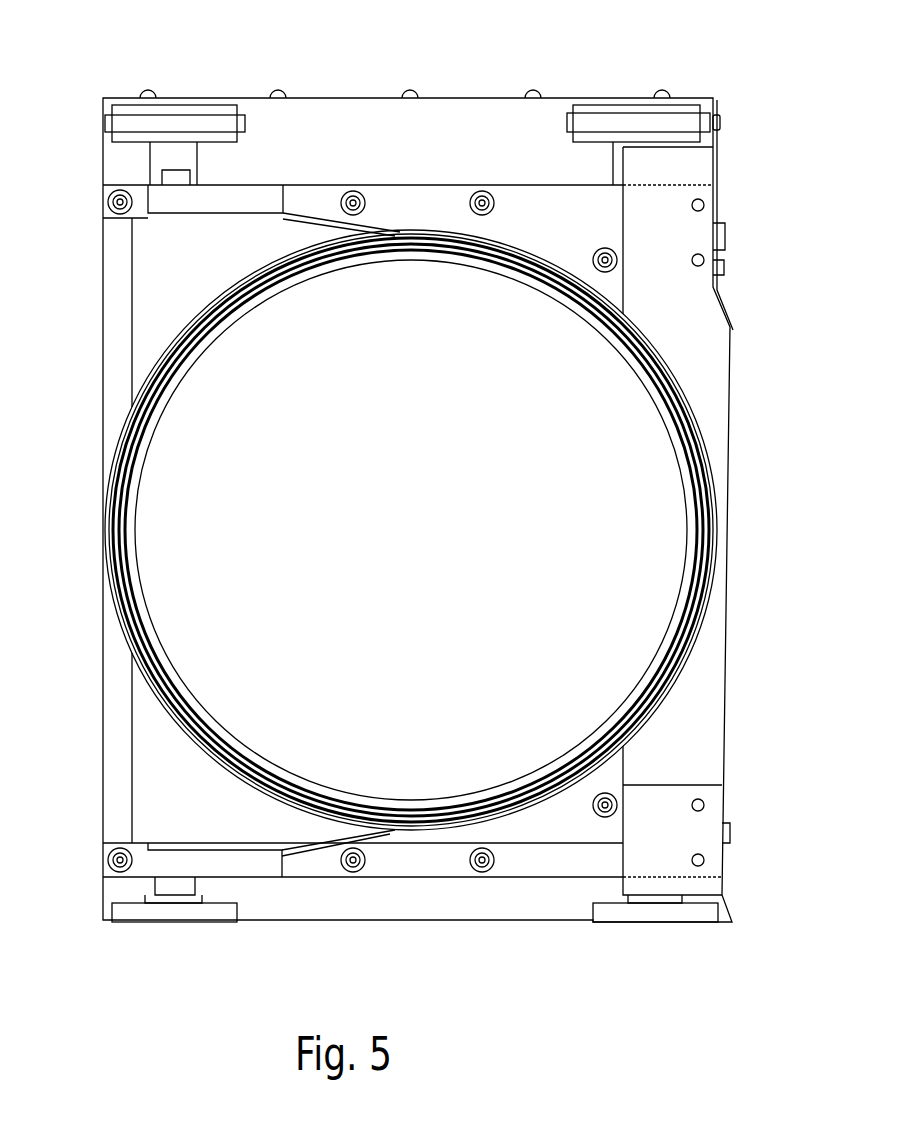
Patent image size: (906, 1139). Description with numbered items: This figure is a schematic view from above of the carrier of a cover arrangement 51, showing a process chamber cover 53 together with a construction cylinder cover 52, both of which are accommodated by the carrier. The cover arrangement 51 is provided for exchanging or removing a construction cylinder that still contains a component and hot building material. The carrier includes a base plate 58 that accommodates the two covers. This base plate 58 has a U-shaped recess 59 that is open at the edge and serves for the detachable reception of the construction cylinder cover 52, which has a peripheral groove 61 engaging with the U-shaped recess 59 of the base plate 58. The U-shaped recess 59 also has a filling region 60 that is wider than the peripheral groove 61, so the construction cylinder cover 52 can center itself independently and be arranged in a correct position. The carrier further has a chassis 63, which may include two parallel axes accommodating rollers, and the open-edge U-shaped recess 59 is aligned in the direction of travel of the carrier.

The cover arrangement 51 is at (582, 83).
The construction cylinder cover 52 is at (610, 528).
The process chamber cover 53 is at (213, 295).
The base plate 58 is at (547, 857).
The U-shaped recess 59 is at (157, 777).
The filling region 60 is at (178, 225).
The peripheral groove 61 is at (603, 770).
The chassis 63 is at (657, 947).